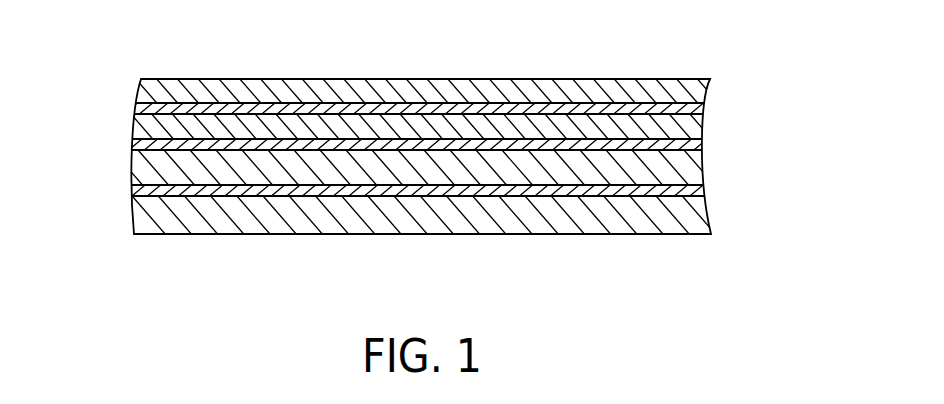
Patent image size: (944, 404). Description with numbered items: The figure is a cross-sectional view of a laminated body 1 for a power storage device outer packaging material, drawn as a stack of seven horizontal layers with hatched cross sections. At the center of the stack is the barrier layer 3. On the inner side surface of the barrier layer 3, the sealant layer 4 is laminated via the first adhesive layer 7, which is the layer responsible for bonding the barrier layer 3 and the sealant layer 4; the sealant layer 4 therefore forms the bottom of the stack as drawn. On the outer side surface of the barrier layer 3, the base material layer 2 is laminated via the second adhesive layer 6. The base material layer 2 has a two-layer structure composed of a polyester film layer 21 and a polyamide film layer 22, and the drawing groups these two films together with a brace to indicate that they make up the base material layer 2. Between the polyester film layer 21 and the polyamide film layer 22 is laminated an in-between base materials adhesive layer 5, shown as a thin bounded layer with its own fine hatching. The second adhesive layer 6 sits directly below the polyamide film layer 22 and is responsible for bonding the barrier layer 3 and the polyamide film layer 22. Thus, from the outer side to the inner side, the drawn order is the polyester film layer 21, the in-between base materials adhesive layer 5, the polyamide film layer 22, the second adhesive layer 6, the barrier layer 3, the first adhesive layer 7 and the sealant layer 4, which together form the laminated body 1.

The laminated body 1 is at (609, 22).
The base material layer 2 is at (820, 63).
The polyester film layer 21 is at (702, 95).
The polyamide film layer 22 is at (697, 128).
The barrier layer 3 is at (700, 168).
The sealant layer 4 is at (703, 208).
The in-between base materials adhesive layer 5 is at (134, 110).
The second adhesive layer 6 is at (132, 146).
The first adhesive layer 7 is at (134, 190).